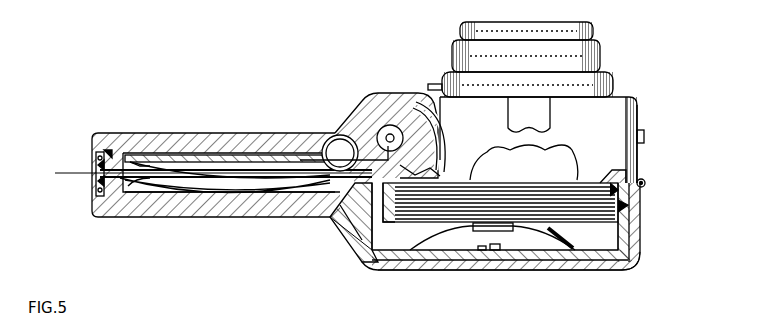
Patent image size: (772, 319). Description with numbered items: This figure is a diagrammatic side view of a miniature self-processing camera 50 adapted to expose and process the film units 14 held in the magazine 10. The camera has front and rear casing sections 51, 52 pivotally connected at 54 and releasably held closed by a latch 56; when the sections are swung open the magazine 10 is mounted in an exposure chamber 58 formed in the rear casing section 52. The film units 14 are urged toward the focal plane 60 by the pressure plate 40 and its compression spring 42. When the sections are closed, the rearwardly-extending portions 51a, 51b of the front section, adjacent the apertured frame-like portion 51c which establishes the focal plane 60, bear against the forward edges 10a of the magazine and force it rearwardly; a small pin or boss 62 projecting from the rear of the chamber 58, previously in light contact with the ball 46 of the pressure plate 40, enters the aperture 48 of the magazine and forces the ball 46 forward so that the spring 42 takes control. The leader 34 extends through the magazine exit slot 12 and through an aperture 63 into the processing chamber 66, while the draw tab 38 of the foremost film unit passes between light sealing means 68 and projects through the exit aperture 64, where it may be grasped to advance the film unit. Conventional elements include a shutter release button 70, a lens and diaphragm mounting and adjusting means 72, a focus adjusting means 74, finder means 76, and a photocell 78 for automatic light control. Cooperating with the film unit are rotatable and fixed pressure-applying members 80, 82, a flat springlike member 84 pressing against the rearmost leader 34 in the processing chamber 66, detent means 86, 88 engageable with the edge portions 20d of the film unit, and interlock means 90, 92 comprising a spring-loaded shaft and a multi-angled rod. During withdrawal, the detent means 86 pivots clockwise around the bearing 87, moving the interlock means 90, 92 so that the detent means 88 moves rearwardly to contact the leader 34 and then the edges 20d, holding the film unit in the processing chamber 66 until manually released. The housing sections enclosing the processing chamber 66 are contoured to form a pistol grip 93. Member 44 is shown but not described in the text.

The magazine 10 is at (640, 250).
The forward edges of the magazine 10a is at (641, 178).
The exit slot 12 is at (360, 225).
The film units 14 is at (626, 222).
The edge portions of the film unit 20d is at (472, 183).
The leader 34 is at (130, 190).
The draw tab 38 is at (72, 176).
The pressure plate 40 is at (633, 268).
The compression spring 42 is at (570, 258).
The arched spring 44 is at (506, 233).
The ball 46 is at (486, 233).
The aperture of the magazine 48 is at (480, 255).
The camera 50 is at (652, 104).
The front casing section 51 is at (630, 97).
The rearwardly-extending portion of the front section 51a is at (624, 196).
The rearwardly-extending portion of the front section 51b is at (352, 205).
The apertured frame-like portion 51c is at (614, 168).
The rear casing section 52 is at (592, 272).
The pivotal connection 54 is at (646, 183).
The latch 56 is at (93, 200).
The exposure chamber 58 is at (380, 230).
The focal plane 60 is at (626, 210).
The pin or boss 62 is at (498, 257).
The aperture 63 is at (348, 192).
The exit aperture 64 is at (88, 166).
The processing chamber 66 is at (303, 158).
The light sealing means 68 is at (97, 157).
The shutter release button 70 is at (644, 136).
The lens and diaphragm mounting and adjusting means 72 is at (598, 65).
The focus adjusting means 74 is at (428, 87).
The finder means 76 is at (458, 64).
The photocell 78 is at (548, 117).
The rotatable pressure-applying member 80 is at (330, 150).
The fixed pressure-applying member 82 is at (305, 212).
The flat springlike member 84 is at (186, 195).
The detent means 86 is at (427, 166).
The bearing 87 is at (434, 145).
The detent means 88 is at (140, 158).
The interlock means 90 is at (378, 126).
The interlock means 92 is at (221, 155).
The pistol grip 93 is at (162, 220).